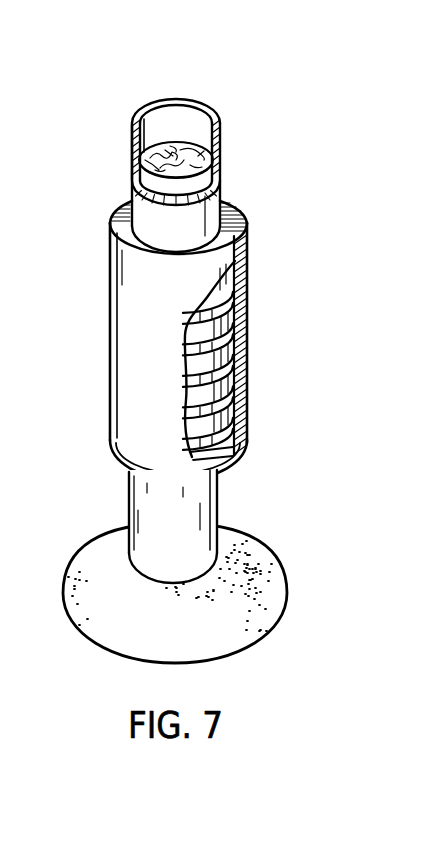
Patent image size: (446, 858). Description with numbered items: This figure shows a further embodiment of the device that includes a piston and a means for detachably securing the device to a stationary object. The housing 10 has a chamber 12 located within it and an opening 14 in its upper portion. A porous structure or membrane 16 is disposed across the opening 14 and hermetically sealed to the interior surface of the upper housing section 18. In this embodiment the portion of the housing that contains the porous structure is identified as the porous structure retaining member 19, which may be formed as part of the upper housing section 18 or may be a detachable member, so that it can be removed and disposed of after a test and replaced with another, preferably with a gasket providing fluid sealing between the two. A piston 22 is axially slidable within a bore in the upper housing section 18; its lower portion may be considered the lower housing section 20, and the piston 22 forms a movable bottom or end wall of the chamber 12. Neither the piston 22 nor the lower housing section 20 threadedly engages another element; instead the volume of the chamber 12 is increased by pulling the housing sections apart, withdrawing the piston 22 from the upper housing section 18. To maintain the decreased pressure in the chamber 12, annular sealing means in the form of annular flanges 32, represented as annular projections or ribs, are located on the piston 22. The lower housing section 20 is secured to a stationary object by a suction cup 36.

The housing 10 is at (325, 396).
The chamber 12 is at (218, 278).
The opening 14 is at (186, 113).
The porous structure or membrane 16 is at (197, 158).
The upper housing section 18 is at (120, 330).
The porous structure retaining member 19 is at (129, 134).
The lower housing section 20 is at (220, 497).
The piston 22 is at (226, 296).
The annular flanges 32 is at (232, 318).
The suction cup 36 is at (257, 588).